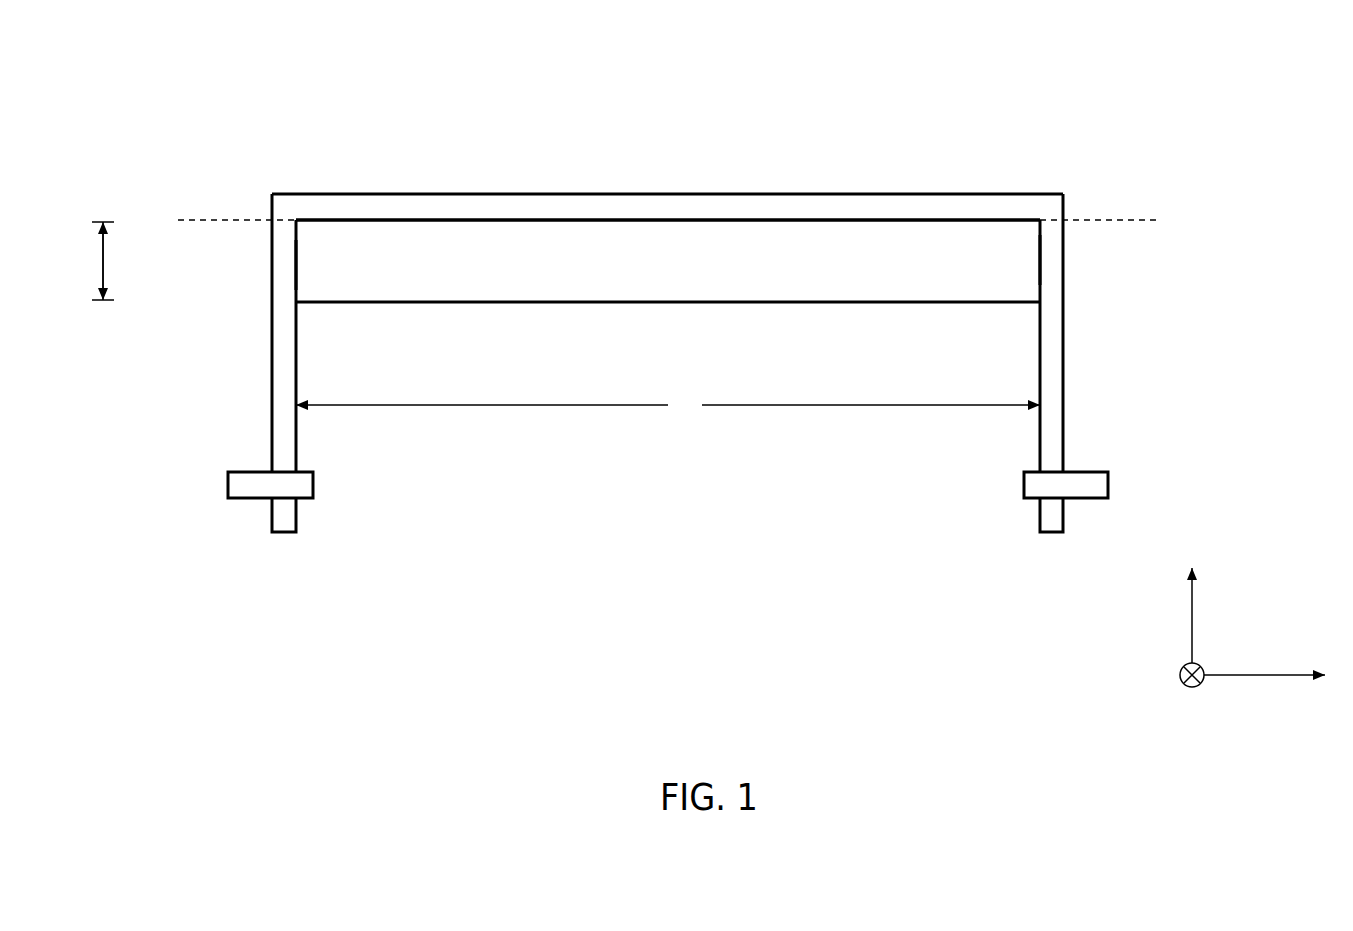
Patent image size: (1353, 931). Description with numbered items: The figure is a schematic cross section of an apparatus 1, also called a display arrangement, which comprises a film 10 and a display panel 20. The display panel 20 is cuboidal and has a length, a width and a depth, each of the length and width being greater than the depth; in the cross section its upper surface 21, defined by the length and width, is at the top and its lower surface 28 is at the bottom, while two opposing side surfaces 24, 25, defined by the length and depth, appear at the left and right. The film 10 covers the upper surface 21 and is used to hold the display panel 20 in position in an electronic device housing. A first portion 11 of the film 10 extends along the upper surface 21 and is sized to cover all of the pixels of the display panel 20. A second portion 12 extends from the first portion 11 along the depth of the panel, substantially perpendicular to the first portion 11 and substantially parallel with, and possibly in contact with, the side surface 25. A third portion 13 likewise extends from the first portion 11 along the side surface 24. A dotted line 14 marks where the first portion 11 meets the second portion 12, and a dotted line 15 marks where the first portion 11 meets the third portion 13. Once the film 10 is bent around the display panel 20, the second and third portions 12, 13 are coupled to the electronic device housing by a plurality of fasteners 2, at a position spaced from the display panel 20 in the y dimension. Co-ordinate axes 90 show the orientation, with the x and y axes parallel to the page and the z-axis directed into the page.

The apparatus 1 is at (320, 137).
The fasteners 2 is at (240, 472).
The film 10 is at (1033, 157).
The first portion 11 is at (730, 194).
The second portion 12 is at (1065, 348).
The third portion 13 is at (272, 340).
The dotted line 14 is at (1160, 222).
The dotted line 15 is at (183, 221).
The display panel 20 is at (668, 248).
The upper surface 21 is at (808, 220).
The side surface 24 is at (296, 263).
The side surface 25 is at (1040, 255).
The lower surface 28 is at (655, 303).
The co-ordinate axes 90 is at (1243, 697).